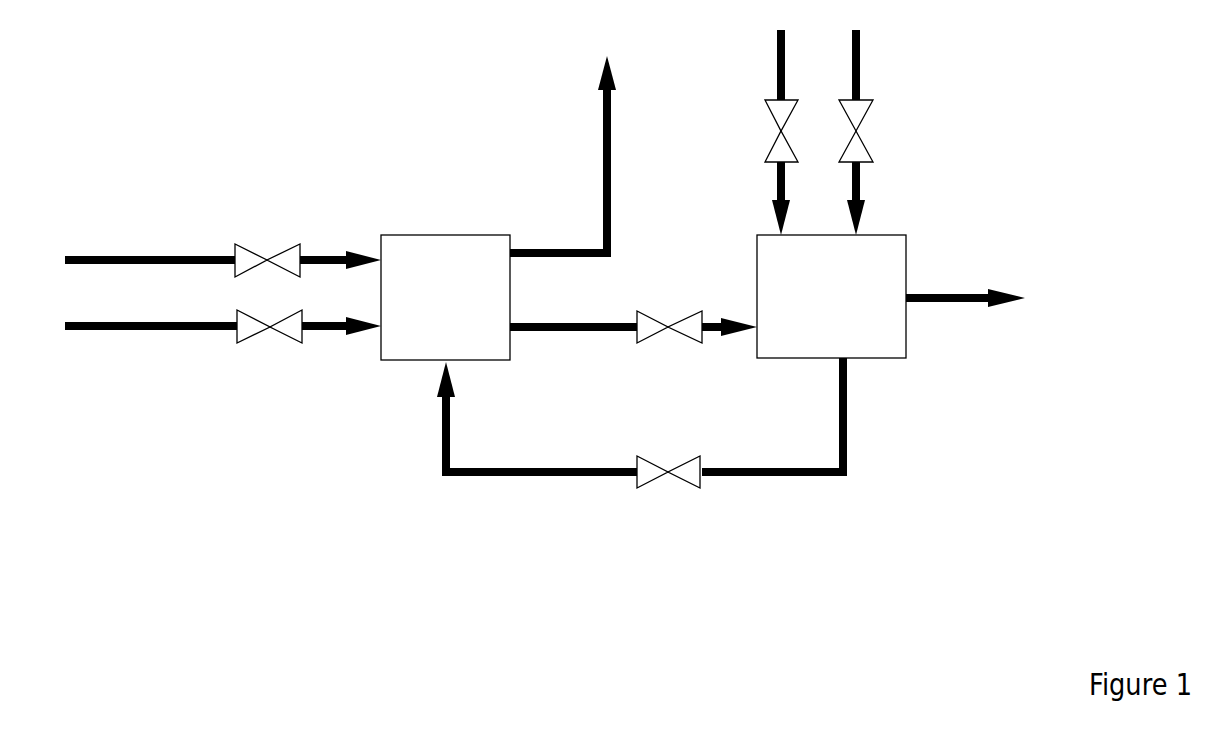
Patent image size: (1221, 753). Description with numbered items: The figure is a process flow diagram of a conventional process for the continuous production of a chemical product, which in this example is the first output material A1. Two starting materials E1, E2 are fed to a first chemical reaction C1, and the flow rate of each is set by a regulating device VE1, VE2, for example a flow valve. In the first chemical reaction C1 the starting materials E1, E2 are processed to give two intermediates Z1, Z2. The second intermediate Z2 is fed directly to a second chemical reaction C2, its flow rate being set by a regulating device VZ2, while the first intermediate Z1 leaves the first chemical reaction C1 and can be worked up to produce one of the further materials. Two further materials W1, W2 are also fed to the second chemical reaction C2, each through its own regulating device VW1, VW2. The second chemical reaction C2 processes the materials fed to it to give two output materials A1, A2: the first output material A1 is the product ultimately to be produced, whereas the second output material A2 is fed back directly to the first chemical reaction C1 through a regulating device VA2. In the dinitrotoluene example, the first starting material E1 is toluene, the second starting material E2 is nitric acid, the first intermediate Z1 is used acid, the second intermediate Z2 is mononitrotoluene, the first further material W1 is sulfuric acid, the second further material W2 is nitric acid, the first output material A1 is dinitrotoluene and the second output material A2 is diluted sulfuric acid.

The first starting material E1 is at (127, 257).
The second starting material E2 is at (183, 324).
The regulating device VE1 is at (267, 258).
The regulating device VE2 is at (270, 329).
The first chemical reaction C1 is at (467, 312).
The first intermediate Z1 is at (563, 250).
The second intermediate Z2 is at (573, 333).
The regulating device VZ2 is at (668, 329).
The second chemical reaction C2 is at (853, 312).
The first further material W1 is at (787, 37).
The second further material W2 is at (862, 77).
The regulating device VW1 is at (770, 131).
The regulating device VW2 is at (862, 129).
The first output material A1 is at (948, 293).
The second output material A2 is at (850, 410).
The regulating device VA2 is at (668, 474).